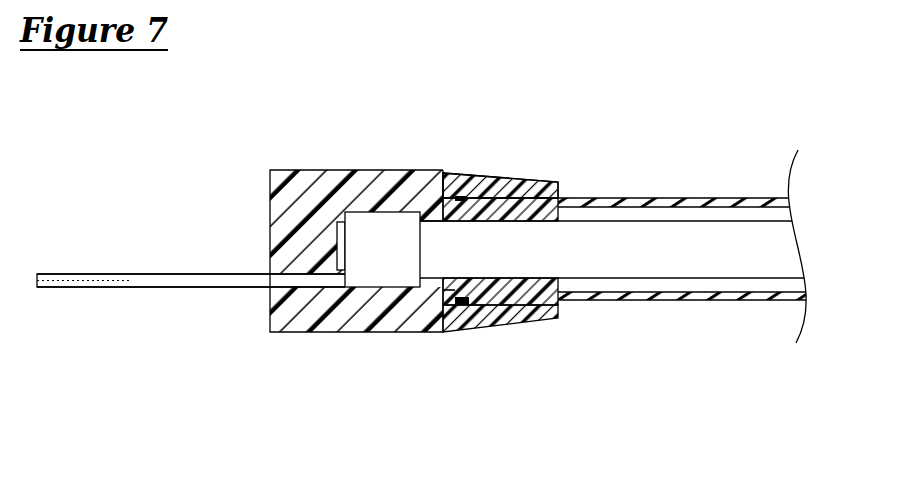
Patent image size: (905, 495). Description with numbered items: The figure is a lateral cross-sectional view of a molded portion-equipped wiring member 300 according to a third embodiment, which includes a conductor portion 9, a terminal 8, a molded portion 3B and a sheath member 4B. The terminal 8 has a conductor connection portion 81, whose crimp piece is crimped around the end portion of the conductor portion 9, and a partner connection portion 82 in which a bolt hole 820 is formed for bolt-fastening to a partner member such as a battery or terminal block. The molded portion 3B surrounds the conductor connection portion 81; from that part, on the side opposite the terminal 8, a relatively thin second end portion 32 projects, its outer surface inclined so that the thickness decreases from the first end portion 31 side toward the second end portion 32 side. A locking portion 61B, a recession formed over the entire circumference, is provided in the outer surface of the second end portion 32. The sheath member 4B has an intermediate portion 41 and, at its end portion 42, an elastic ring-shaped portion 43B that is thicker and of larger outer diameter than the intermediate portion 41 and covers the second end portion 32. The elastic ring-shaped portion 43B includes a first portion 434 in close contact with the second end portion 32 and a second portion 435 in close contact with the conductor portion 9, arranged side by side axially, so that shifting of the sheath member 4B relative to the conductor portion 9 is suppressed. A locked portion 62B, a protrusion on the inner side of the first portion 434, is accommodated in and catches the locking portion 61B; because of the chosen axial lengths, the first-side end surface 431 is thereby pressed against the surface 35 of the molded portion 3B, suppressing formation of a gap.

The molded portion-equipped wiring member 300 is at (690, 93).
The molded portion 3B is at (265, 161).
The first end portion 31 is at (270, 199).
The conductor connection portion 81 is at (358, 224).
The terminal 8 is at (174, 298).
The partner connection portion 82 is at (175, 277).
The bolt hole 820 is at (78, 277).
The sheath member 4B is at (766, 181).
The intermediate portion 41 is at (708, 197).
The elastic ring-shaped portion 43B is at (492, 188).
The end portion 42 is at (500, 147).
The first-side end surface 431 is at (440, 192).
The surface 35 is at (456, 196).
The second end portion 32 is at (518, 196).
The first portion 434 is at (512, 315).
The second portion 435 is at (547, 313).
The locking portion 61B is at (447, 296).
The locked portion 62B is at (462, 305).
The conductor portion 9 is at (790, 252).